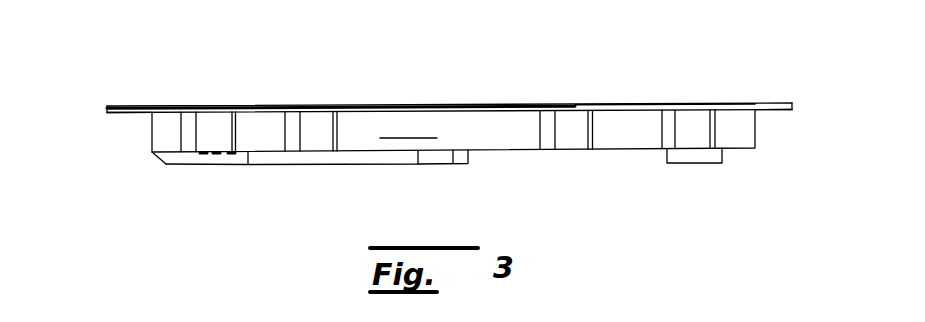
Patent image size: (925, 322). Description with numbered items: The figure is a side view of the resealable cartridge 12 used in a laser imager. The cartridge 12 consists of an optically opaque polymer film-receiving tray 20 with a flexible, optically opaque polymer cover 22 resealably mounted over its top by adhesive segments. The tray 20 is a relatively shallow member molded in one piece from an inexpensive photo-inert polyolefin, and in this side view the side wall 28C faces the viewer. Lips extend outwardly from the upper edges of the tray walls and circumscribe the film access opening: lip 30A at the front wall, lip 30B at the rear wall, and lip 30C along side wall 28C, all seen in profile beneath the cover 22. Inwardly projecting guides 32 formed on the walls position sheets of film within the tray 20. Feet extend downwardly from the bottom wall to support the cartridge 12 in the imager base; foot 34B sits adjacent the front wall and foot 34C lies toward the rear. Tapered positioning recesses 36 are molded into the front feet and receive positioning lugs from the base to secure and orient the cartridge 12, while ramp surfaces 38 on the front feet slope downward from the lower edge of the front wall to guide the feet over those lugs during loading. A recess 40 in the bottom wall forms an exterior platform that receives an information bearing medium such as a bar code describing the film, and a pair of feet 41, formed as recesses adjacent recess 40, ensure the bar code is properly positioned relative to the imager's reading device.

The resealable cartridge 12 is at (658, 85).
The film-receiving tray 20 is at (738, 133).
The cover 22 is at (377, 104).
The side wall 28C is at (409, 124).
The lip 30A is at (108, 110).
The lip 30B is at (793, 107).
The lip 30C is at (607, 108).
The guides 32 is at (217, 122).
The foot 34B is at (190, 160).
The foot 34C is at (708, 157).
The positioning recesses 36 is at (230, 158).
The ramp surfaces 38 is at (160, 162).
The recess 40 is at (308, 160).
The feet 41 is at (443, 160).